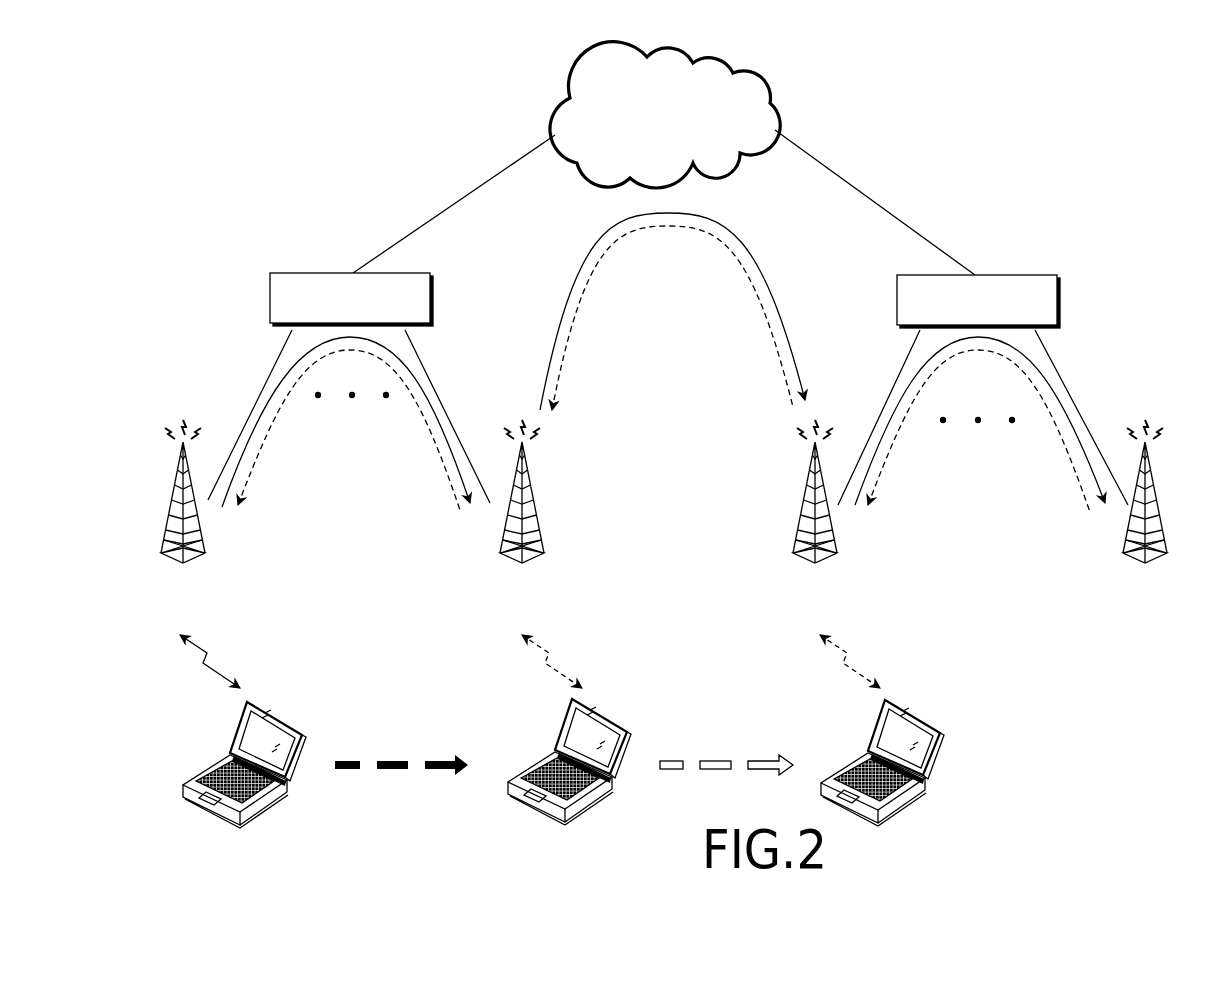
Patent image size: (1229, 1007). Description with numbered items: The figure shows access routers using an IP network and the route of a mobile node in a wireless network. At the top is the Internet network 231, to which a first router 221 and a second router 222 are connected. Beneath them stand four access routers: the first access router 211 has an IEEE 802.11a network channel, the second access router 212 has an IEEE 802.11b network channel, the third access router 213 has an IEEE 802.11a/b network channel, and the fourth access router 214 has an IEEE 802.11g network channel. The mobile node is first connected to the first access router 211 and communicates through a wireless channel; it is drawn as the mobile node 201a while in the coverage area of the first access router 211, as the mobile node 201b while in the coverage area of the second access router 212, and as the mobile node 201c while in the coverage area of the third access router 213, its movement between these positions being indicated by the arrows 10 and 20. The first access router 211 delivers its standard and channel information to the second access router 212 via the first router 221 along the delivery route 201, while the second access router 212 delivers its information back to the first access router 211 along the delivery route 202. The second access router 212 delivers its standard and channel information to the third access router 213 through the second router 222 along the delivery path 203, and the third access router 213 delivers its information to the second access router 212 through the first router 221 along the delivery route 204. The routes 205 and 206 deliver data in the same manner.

The Internet network 231 is at (775, 108).
The first router 221 is at (433, 298).
The second router 222 is at (1060, 300).
The delivery route 201 is at (430, 393).
The delivery route 202 is at (437, 447).
The delivery path 203 is at (770, 280).
The delivery route 204 is at (772, 340).
The route 205 is at (1050, 374).
The route 206 is at (1067, 449).
The first access router 211 is at (200, 522).
The second access router 212 is at (540, 522).
The third access router 213 is at (835, 522).
The fourth access router 214 is at (1165, 522).
The mobile node 201a is at (283, 790).
The mobile node 201b is at (608, 790).
The mobile node 201c is at (935, 762).
The first handover movement 10 is at (392, 757).
The second handover movement 20 is at (717, 757).